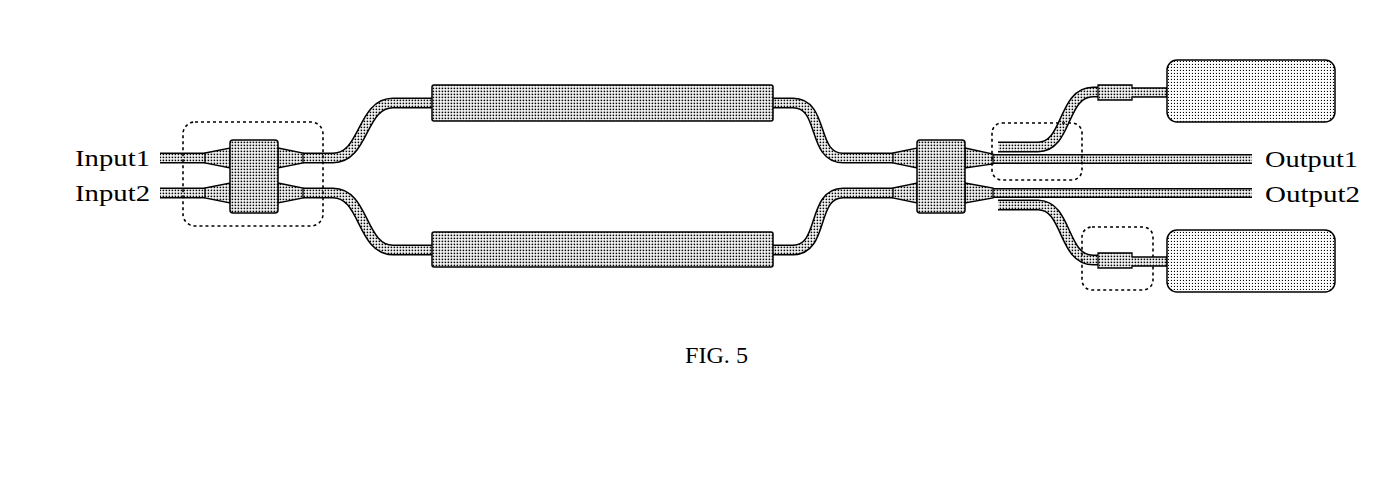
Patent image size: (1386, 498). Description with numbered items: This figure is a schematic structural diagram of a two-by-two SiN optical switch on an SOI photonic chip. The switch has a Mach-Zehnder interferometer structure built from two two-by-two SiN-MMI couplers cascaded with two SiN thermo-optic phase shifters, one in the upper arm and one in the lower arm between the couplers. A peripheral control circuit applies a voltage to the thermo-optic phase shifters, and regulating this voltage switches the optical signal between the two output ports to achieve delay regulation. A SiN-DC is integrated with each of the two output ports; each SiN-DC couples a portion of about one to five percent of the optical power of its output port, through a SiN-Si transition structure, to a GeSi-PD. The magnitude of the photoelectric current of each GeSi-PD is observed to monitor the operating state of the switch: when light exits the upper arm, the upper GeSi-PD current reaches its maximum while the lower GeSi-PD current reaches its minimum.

The 2×2 SiN multimode interference coupler SiN-MMI is at (253, 116).
The SiN directional coupler SiN-DC is at (1027, 118).
The GeSi photodetector GeSi-PD is at (1251, 176).